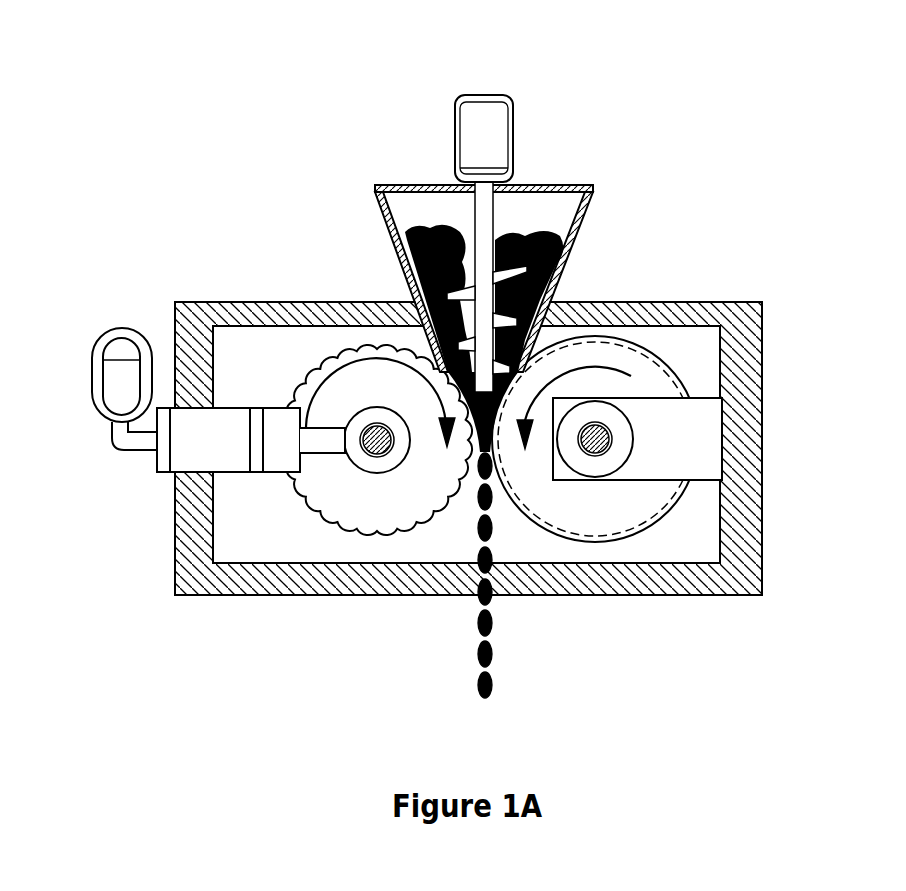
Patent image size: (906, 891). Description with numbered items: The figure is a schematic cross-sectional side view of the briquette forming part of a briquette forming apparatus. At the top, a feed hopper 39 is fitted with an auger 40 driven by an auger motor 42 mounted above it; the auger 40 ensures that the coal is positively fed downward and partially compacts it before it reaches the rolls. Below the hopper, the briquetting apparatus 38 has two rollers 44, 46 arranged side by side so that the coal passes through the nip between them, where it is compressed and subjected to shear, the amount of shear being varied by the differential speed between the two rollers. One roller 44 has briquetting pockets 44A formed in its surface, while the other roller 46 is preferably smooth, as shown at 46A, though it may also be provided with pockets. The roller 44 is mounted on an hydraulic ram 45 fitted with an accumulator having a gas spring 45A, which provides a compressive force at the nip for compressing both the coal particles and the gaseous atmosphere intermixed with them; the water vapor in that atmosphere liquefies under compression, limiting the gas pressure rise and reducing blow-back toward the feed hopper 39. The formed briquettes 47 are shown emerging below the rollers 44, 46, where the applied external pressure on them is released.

The briquetting apparatus 38 is at (83, 418).
The feed hopper 39 is at (385, 263).
The auger 40 is at (558, 270).
The auger motor 42 is at (463, 133).
The roller 44 is at (340, 505).
The briquetting pockets 44A is at (313, 523).
The hydraulic ram 45 is at (193, 447).
The gas spring 45A is at (115, 350).
The roller 46 is at (653, 447).
The smooth surface 46A is at (648, 357).
The briquettes 47 is at (492, 630).